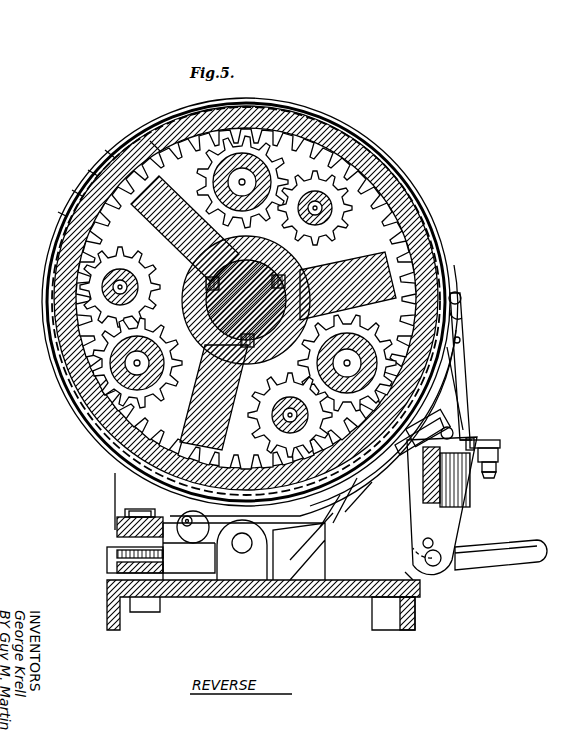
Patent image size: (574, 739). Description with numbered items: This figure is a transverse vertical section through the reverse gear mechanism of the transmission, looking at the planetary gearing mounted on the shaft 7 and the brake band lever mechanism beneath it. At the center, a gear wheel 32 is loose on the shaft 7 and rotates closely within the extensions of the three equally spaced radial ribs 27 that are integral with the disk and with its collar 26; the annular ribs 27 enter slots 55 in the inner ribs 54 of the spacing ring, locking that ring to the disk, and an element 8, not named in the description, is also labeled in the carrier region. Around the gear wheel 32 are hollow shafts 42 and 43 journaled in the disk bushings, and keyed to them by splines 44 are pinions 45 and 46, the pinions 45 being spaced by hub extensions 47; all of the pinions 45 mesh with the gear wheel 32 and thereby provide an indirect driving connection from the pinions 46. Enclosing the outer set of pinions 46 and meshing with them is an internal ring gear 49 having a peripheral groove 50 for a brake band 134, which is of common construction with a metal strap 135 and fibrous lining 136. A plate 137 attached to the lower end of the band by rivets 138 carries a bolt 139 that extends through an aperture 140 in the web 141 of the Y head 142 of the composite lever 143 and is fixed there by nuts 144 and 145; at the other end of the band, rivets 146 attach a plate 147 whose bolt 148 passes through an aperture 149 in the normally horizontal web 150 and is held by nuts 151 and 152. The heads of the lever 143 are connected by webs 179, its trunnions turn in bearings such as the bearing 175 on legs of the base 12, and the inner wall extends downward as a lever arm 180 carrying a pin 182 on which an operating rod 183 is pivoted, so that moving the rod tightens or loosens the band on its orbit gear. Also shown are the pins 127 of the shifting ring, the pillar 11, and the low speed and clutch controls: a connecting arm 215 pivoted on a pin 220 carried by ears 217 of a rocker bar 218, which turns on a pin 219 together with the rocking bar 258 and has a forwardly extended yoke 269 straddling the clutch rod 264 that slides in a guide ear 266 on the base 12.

The shaft 7 is at (330, 312).
The carrier arm 8 is at (315, 266).
The pillar 11 is at (115, 480).
The base 12 is at (107, 590).
The collar 26 is at (214, 397).
The radial ribs 27 is at (185, 229).
The gear wheel 32 is at (120, 275).
The hollow shaft 42 is at (312, 122).
The hollow shaft 43 is at (378, 168).
The splines 44 is at (388, 150).
The pinion 45 is at (258, 168).
The pinion 46 is at (400, 200).
The hub extensions 47 is at (300, 178).
The internal ring gear 49 is at (440, 252).
The peripheral groove 50 is at (450, 218).
The inner ribs 54 is at (150, 141).
The slots 55 is at (60, 212).
The pins 127 is at (412, 578).
The brake band 134 is at (113, 153).
The metal strap 135 is at (90, 172).
The fibrous lining 136 is at (76, 192).
The plate 137 is at (340, 511).
The rivets 138 is at (340, 520).
The bolt 139 is at (361, 497).
The aperture 140 is at (418, 425).
The web 141 is at (418, 440).
The Y head 142 is at (500, 444).
The composite lever 143 is at (446, 524).
The nut 144 is at (412, 436).
The nut 145 is at (452, 430).
The rivets 146 is at (458, 296).
The plate 147 is at (462, 316).
The bolt 148 is at (463, 358).
The aperture 149 is at (498, 452).
The horizontal web 150 is at (494, 476).
The nut 151 is at (487, 433).
The nut 152 is at (496, 466).
The bearing 175 is at (464, 432).
The webs 179 is at (455, 484).
The lever arm 180 is at (450, 570).
The pin 182 is at (441, 556).
The operating rod 183 is at (520, 552).
The connecting arm 215 is at (311, 543).
The ears 217 is at (182, 558).
The rocker bar 218 is at (117, 524).
The pin 219 is at (130, 512).
The pin 220 is at (185, 516).
The rocking bar 258 is at (107, 556).
The rod 264 is at (292, 597).
The guide ear 266 is at (240, 597).
The yoke 269 is at (190, 597).